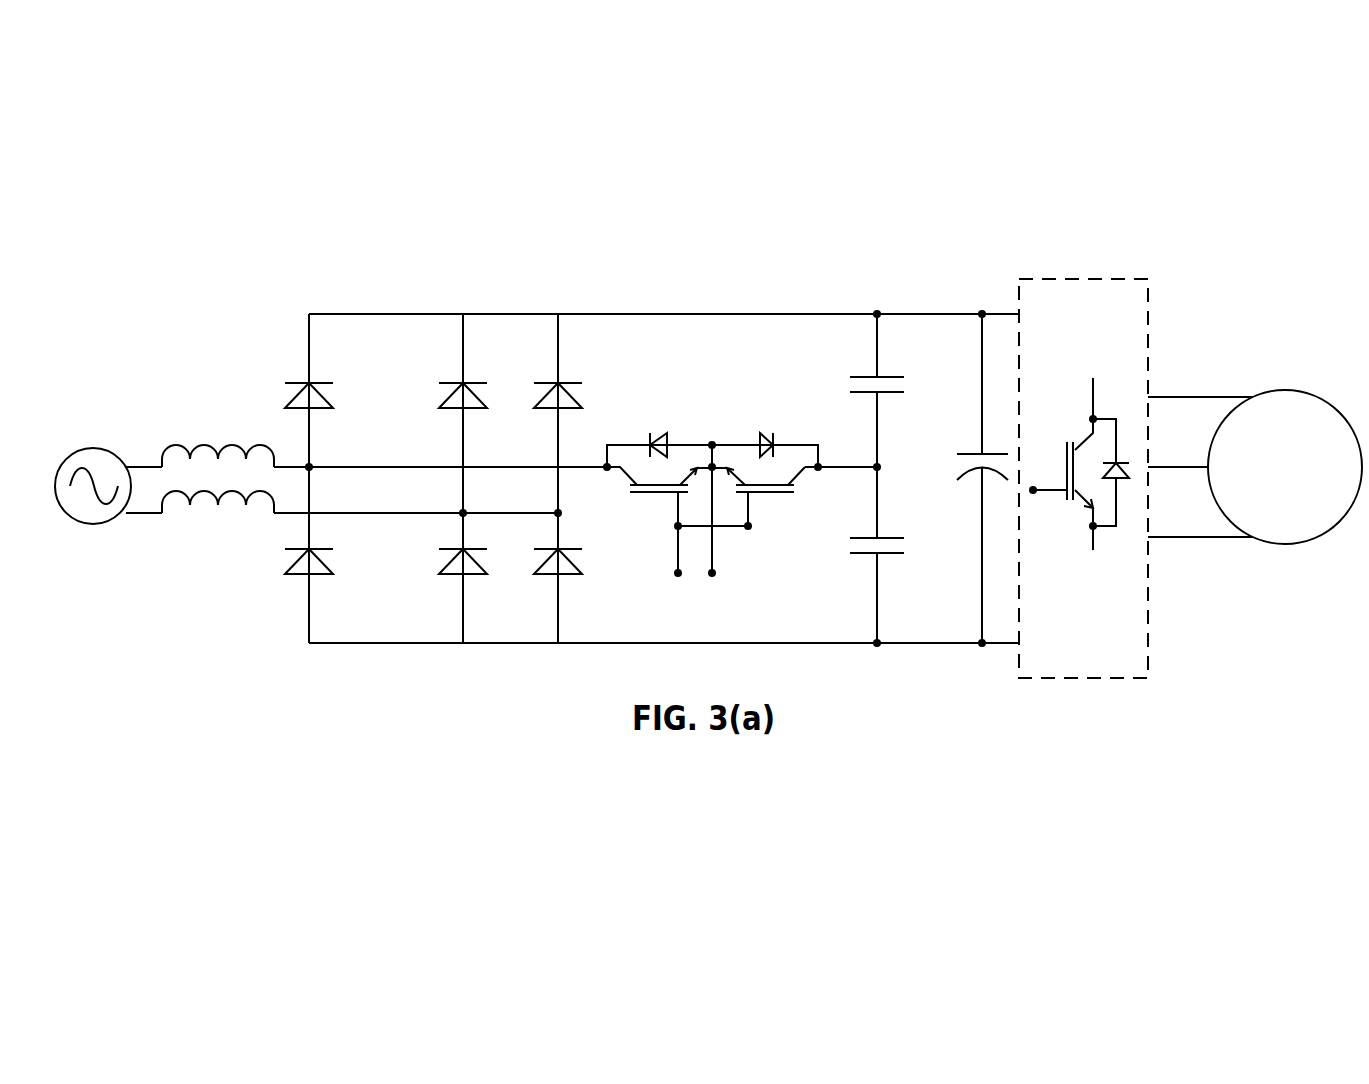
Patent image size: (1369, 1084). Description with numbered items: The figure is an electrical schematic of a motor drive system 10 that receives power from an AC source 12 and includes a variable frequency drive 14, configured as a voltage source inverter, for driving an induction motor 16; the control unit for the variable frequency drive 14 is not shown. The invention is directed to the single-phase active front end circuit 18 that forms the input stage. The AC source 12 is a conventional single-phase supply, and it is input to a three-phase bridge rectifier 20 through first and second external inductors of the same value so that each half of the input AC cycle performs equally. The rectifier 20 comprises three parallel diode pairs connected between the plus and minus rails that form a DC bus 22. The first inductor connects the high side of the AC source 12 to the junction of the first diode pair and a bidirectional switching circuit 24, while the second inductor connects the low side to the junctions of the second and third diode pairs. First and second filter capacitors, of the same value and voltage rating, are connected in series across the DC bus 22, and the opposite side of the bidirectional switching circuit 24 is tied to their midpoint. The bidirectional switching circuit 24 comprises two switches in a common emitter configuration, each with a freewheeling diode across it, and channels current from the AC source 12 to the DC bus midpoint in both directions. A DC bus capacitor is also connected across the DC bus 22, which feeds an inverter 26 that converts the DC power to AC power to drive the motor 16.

The motor drive system 10 is at (549, 682).
The AC source 12 is at (104, 542).
The variable frequency drive 14 is at (1203, 342).
The induction motor 16 is at (1304, 556).
The single-phase active front end circuit 18 is at (765, 306).
The three-phase bridge rectifier 20 is at (521, 307).
The DC bus 22 is at (875, 308).
The bidirectional switching circuit 24 is at (740, 404).
The inverter 26 is at (1104, 690).